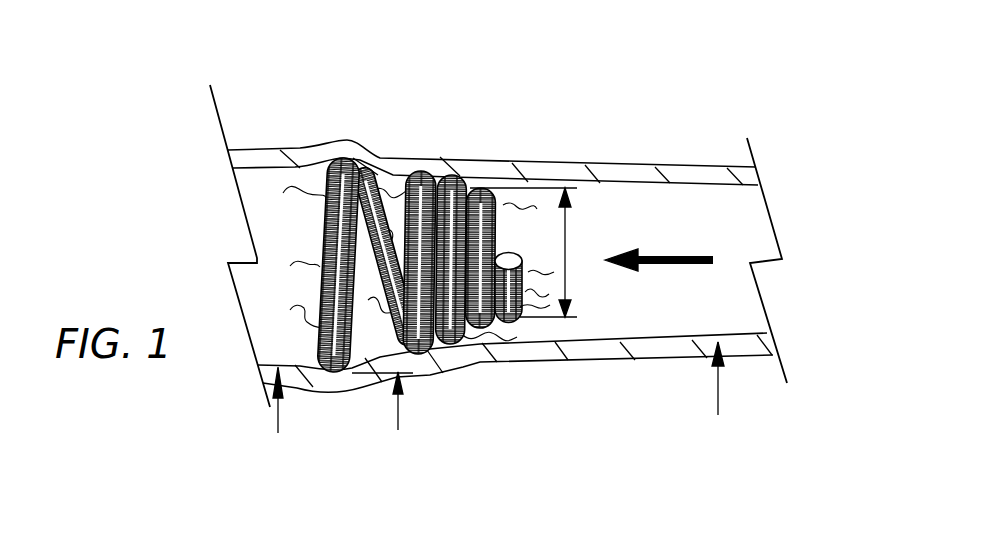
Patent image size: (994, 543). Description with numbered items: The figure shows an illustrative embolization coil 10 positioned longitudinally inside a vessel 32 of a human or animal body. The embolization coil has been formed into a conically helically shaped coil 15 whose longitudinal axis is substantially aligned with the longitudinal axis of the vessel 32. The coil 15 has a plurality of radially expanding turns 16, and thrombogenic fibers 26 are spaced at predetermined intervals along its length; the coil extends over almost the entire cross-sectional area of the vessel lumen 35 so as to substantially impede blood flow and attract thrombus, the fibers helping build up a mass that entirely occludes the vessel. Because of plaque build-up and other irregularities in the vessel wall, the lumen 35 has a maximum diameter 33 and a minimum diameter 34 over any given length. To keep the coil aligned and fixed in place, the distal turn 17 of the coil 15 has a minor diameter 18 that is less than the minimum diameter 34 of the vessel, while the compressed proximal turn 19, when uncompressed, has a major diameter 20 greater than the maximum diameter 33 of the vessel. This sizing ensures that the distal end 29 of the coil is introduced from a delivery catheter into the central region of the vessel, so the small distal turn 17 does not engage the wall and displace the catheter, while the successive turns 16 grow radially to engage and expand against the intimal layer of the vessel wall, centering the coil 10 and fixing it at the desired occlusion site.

The embolization coil 10 is at (464, 58).
The conically helically shaped coil 15 is at (469, 178).
The radially expanding turns 16 is at (469, 348).
The distal turn 17 is at (519, 297).
The minor diameter 18 is at (566, 267).
The compressed proximal turn 19 is at (323, 333).
The major diameter 20 is at (397, 160).
The thrombogenic fibers 26 is at (397, 188).
The distal end 29 is at (518, 248).
The vessel 32 is at (595, 167).
The maximum diameter 33 is at (276, 167).
The minimum diameter 34 is at (716, 183).
The vessel lumen 35 is at (630, 197).